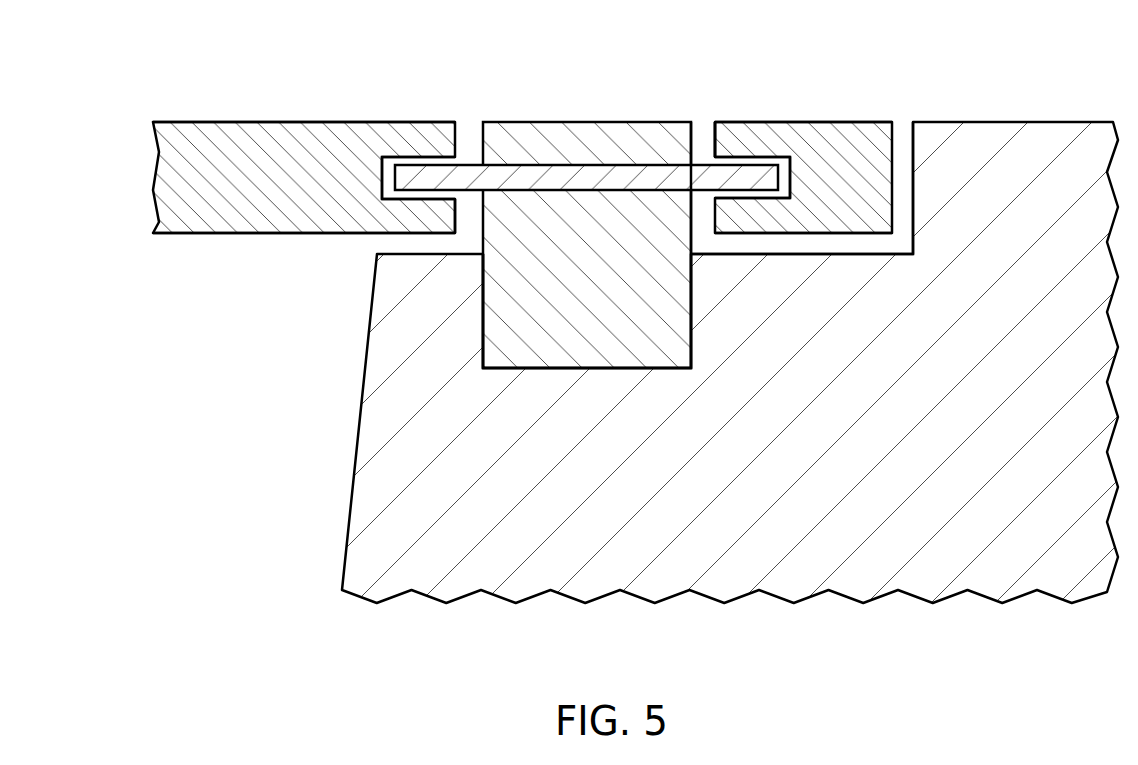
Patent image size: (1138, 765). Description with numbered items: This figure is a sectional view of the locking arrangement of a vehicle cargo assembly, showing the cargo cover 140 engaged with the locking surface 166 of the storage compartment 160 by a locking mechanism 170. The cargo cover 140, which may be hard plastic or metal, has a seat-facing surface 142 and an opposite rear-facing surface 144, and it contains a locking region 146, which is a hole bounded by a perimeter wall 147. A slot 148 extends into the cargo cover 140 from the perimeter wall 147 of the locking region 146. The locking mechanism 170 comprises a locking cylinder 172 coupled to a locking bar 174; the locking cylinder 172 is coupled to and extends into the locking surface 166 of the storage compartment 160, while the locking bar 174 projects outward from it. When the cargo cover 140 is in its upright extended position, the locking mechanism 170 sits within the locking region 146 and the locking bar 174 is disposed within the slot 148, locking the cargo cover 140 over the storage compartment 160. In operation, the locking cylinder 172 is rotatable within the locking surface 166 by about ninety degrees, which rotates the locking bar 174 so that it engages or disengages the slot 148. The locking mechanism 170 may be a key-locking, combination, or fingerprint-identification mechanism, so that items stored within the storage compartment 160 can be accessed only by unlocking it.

The cargo cover 140 is at (186, 179).
The seat-facing surface 142 is at (275, 233).
The rear-facing surface 144 is at (265, 122).
The locking region 146 is at (698, 136).
The perimeter wall 147 is at (458, 213).
The slot 148 is at (387, 152).
The storage compartment 160 is at (320, 344).
The locking surface 166 is at (897, 254).
The locking mechanism 170 is at (594, 108).
The locking cylinder 172 is at (589, 358).
The locking bar 174 is at (471, 168).